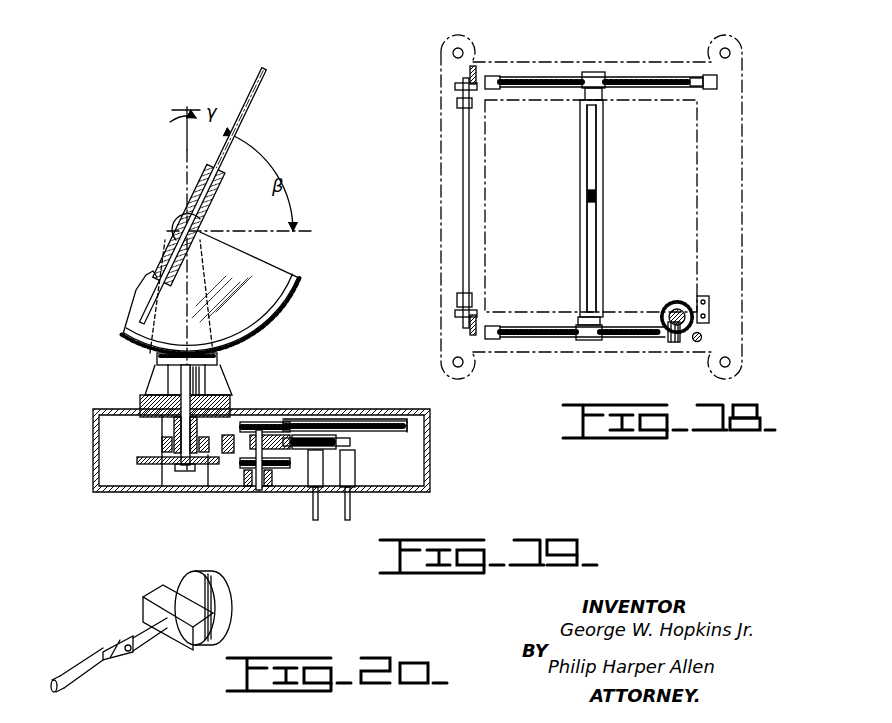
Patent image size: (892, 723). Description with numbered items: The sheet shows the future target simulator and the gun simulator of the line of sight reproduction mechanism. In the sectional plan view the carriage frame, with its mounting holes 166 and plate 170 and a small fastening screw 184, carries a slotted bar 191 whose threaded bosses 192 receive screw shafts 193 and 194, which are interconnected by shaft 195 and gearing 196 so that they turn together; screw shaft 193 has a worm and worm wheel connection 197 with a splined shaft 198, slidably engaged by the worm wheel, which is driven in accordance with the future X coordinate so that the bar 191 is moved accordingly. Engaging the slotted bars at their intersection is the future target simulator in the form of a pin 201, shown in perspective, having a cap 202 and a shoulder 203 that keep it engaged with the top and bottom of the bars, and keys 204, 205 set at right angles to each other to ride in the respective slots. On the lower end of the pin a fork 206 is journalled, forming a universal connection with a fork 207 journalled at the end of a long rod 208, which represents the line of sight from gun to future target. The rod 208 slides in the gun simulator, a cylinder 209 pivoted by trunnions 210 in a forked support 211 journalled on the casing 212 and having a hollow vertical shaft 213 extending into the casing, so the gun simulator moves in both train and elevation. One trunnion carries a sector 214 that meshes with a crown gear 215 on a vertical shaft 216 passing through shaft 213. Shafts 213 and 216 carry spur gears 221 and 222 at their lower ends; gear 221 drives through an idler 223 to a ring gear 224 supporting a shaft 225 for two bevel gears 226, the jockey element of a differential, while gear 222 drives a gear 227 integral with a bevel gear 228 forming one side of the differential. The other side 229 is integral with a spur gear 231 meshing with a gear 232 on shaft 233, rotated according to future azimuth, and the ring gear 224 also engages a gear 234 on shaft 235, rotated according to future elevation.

In FIG. 18, the mounting hole 166 is at (468, 52).
In FIG. 18, the frame plate 170 is at (447, 50).
In FIG. 18, the screw 184 is at (702, 336).
In FIG. 18, the slotted bar 191 is at (603, 243).
In FIG. 18, the bosses 192 is at (592, 72).
In FIG. 18, the screw shaft 193 is at (645, 340).
In FIG. 18, the screw shaft 194 is at (645, 77).
In FIG. 18, the shaft 195 is at (463, 196).
In FIG. 18, the gearing 196 is at (456, 85).
In FIG. 18, the worm and worm wheel connection 197 is at (672, 343).
In FIG. 18, the splined shaft 198 is at (680, 304).
In FIG. 18, the pin 201 is at (586, 196).
In FIG. 20, the pin 201 is at (158, 629).
In FIG. 20, the cap 202 is at (233, 612).
In FIG. 20, the shoulder 203 is at (137, 652).
In FIG. 20, the key 204 is at (208, 592).
In FIG. 18, the key 205 is at (596, 196).
In FIG. 20, the key 205 is at (163, 598).
In FIG. 20, the fork 206 is at (120, 642).
In FIG. 20, the fork 207 is at (92, 659).
In FIG. 19, the rod 208 is at (256, 84).
In FIG. 20, the rod 208 is at (62, 682).
In FIG. 19, the cylinder 209 is at (207, 202).
In FIG. 19, the trunnions 210 is at (176, 232).
In FIG. 19, the forked support 211 is at (226, 380).
In FIG. 19, the casing 212 is at (345, 417).
In FIG. 19, the hollow vertical shaft 213 is at (181, 438).
In FIG. 19, the sector 214 is at (298, 279).
In FIG. 19, the crown gear 215 is at (158, 361).
In FIG. 19, the vertical shaft 216 is at (174, 421).
In FIG. 19, the spur gear 221 is at (160, 457).
In FIG. 19, the spur gear 222 is at (168, 472).
In FIG. 19, the idler 223 is at (208, 472).
In FIG. 19, the ring gear 224 is at (251, 468).
In FIG. 19, the shaft 225 is at (254, 480).
In FIG. 19, the bevel gears 226 is at (280, 420).
In FIG. 19, the gear 227 is at (278, 490).
In FIG. 19, the bevel gear 228 is at (258, 492).
In FIG. 19, the other side of the differential 229 is at (290, 428).
In FIG. 19, the spur gear 231 is at (285, 420).
In FIG. 19, the gear 232 is at (397, 425).
In FIG. 19, the shaft 233 is at (352, 515).
In FIG. 19, the gear 234 is at (350, 442).
In FIG. 19, the shaft 235 is at (314, 522).